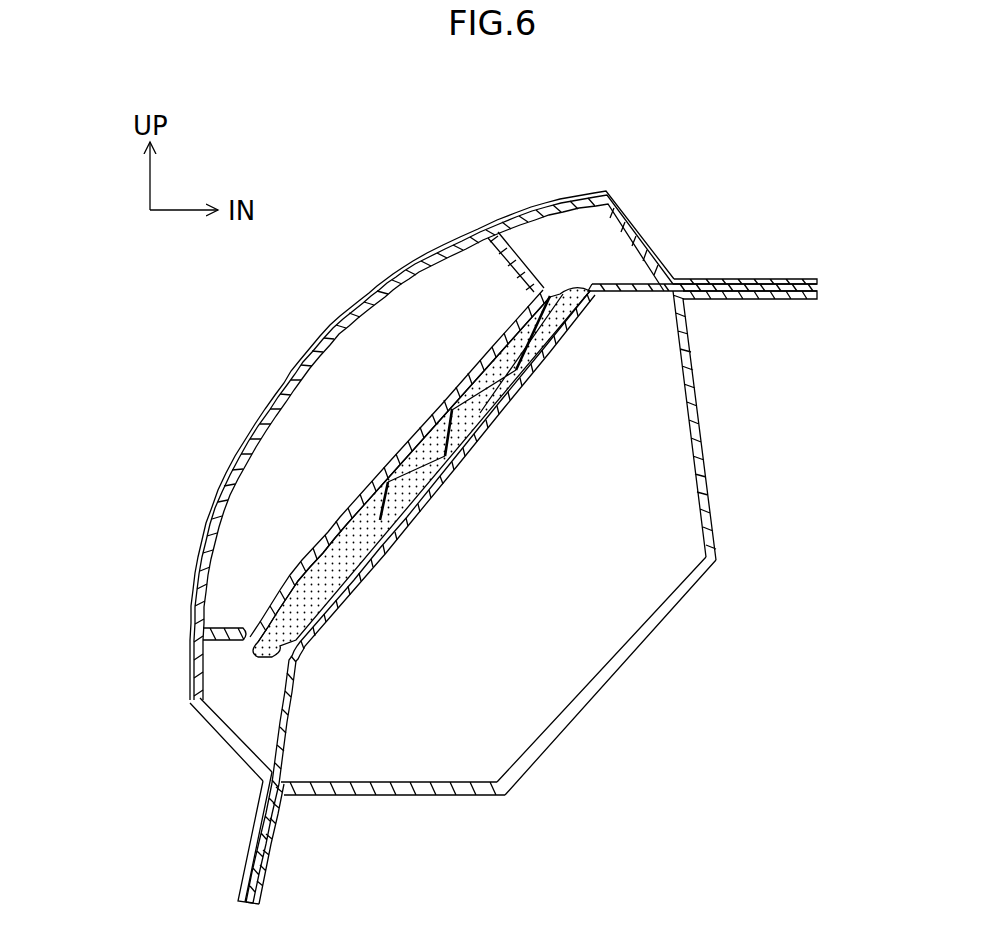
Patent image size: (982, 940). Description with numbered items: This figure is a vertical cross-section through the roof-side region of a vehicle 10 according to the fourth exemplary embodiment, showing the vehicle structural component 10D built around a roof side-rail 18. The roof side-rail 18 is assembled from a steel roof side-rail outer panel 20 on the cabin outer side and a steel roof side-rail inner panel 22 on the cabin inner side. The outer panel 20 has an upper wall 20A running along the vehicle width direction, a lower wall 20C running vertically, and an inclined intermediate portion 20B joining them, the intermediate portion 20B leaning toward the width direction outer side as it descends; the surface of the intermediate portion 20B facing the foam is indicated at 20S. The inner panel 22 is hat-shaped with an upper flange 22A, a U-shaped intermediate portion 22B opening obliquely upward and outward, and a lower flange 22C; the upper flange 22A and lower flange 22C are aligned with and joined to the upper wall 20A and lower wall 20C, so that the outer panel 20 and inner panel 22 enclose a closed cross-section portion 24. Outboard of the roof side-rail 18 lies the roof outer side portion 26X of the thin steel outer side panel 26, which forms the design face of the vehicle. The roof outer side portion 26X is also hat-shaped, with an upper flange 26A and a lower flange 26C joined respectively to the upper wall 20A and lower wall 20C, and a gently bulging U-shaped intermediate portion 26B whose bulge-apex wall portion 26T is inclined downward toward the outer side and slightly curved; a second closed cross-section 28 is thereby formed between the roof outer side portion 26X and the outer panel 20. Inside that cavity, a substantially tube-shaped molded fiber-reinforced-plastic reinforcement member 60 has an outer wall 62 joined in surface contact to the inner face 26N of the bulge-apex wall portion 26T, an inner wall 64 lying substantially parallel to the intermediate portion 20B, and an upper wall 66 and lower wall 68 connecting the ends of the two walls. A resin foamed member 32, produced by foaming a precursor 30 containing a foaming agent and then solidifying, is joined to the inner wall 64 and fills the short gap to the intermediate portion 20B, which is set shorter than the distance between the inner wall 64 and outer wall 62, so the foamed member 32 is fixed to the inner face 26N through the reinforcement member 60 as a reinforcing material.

The vehicle 10 is at (126, 758).
The vehicle structural component 10D is at (126, 659).
The roof side-rail 18 is at (749, 468).
The roof side-rail outer panel 20 is at (483, 557).
The upper wall 20A is at (757, 284).
The intermediate portion 20B is at (415, 511).
The lower wall 20C is at (255, 847).
The bracket support surface 20S is at (377, 549).
The roof side-rail inner panel 22 is at (548, 552).
The upper flange 22A is at (757, 300).
The intermediate portion 22B is at (572, 710).
The lower flange 22C is at (268, 860).
The closed cross-section portion 24 is at (540, 650).
The outer side panel 26 is at (488, 506).
The roof outer side portion 26X is at (513, 210).
The upper flange 26A is at (740, 278).
The intermediate portion 26B is at (326, 319).
The lower flange 26C is at (258, 813).
The bulge-apex wall portion 26T is at (286, 366).
The inner face 26N is at (251, 419).
The closed cross-section 28 is at (623, 270).
The precursor 30 is at (290, 577).
The foamed member 32 is at (590, 293).
The reinforcement member 60 is at (411, 257).
The outer wall 62 is at (383, 284).
The inner wall 64 is at (477, 358).
The upper wall 66 is at (517, 254).
The lower wall 68 is at (220, 642).